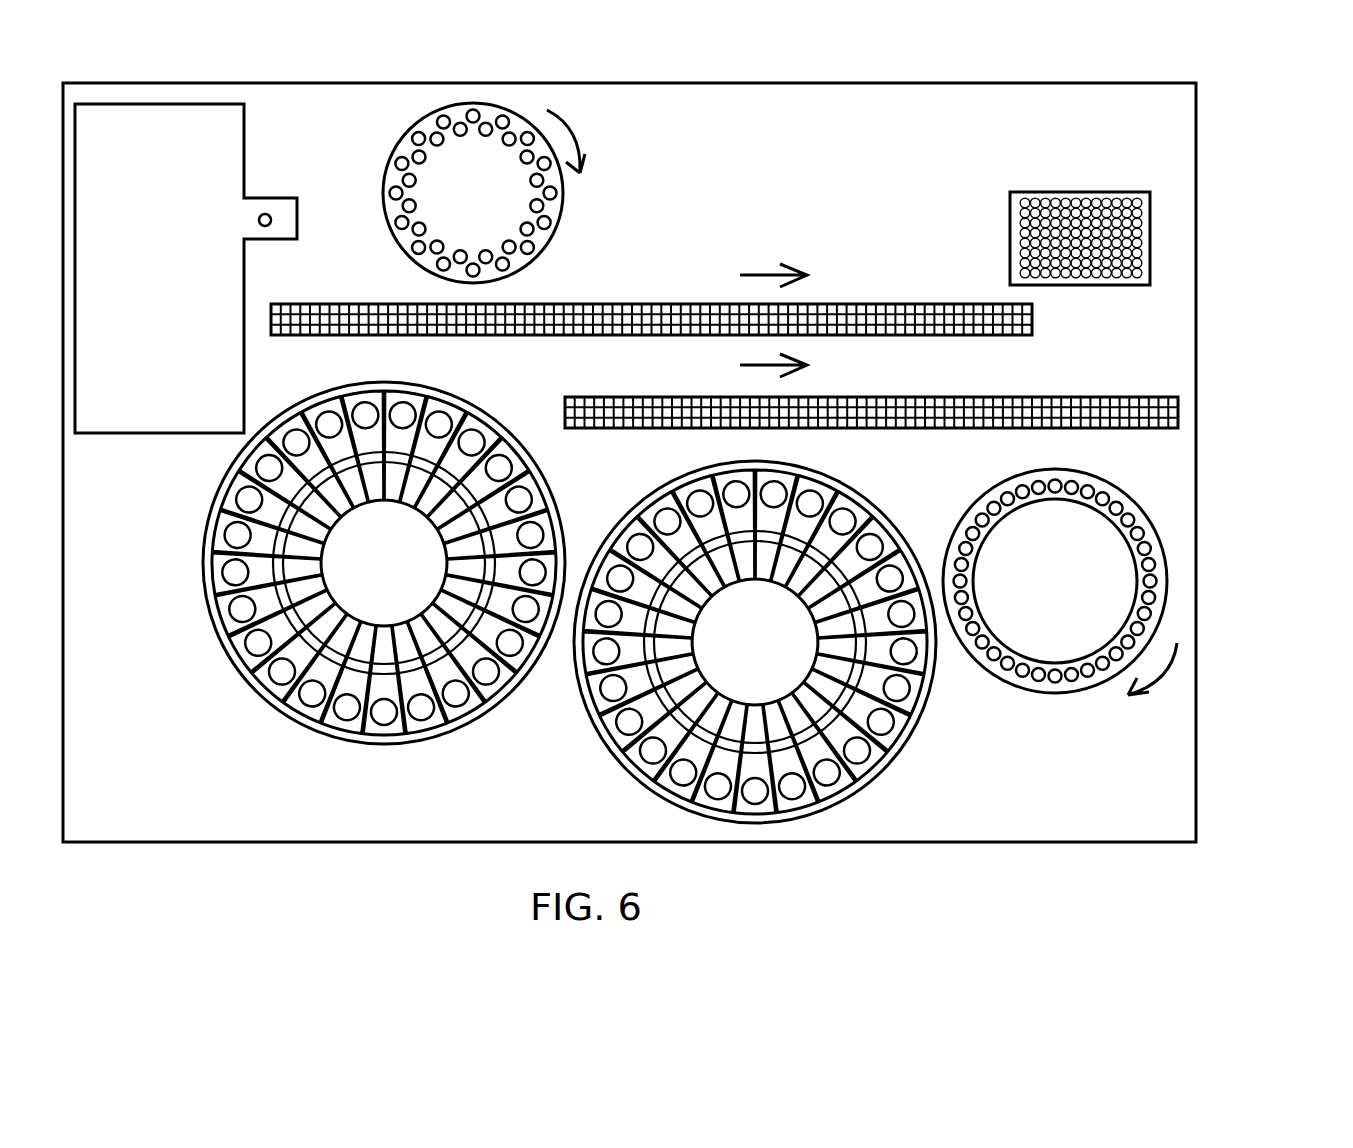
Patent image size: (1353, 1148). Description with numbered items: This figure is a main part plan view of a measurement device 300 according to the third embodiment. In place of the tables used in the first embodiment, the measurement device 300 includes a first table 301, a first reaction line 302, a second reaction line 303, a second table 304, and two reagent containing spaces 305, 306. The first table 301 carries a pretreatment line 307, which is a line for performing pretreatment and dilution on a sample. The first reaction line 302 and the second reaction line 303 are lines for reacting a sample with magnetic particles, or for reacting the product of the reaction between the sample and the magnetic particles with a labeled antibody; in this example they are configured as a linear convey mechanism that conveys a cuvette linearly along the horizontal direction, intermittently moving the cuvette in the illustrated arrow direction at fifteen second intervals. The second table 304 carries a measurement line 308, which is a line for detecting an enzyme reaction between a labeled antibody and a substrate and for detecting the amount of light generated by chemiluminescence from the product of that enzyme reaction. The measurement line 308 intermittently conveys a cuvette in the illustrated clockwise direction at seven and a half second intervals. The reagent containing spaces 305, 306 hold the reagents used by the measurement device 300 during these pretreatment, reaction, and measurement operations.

The measurement device 300 is at (1199, 322).
The first table 301 is at (590, 196).
The first reaction line 302 is at (625, 305).
The second reaction line 303 is at (1042, 395).
The second table 304 is at (1094, 710).
The reagent containing space 305 is at (460, 727).
The reagent containing space 306 is at (887, 758).
The pretreatment line 307 is at (537, 235).
The measurement line 308 is at (1042, 686).